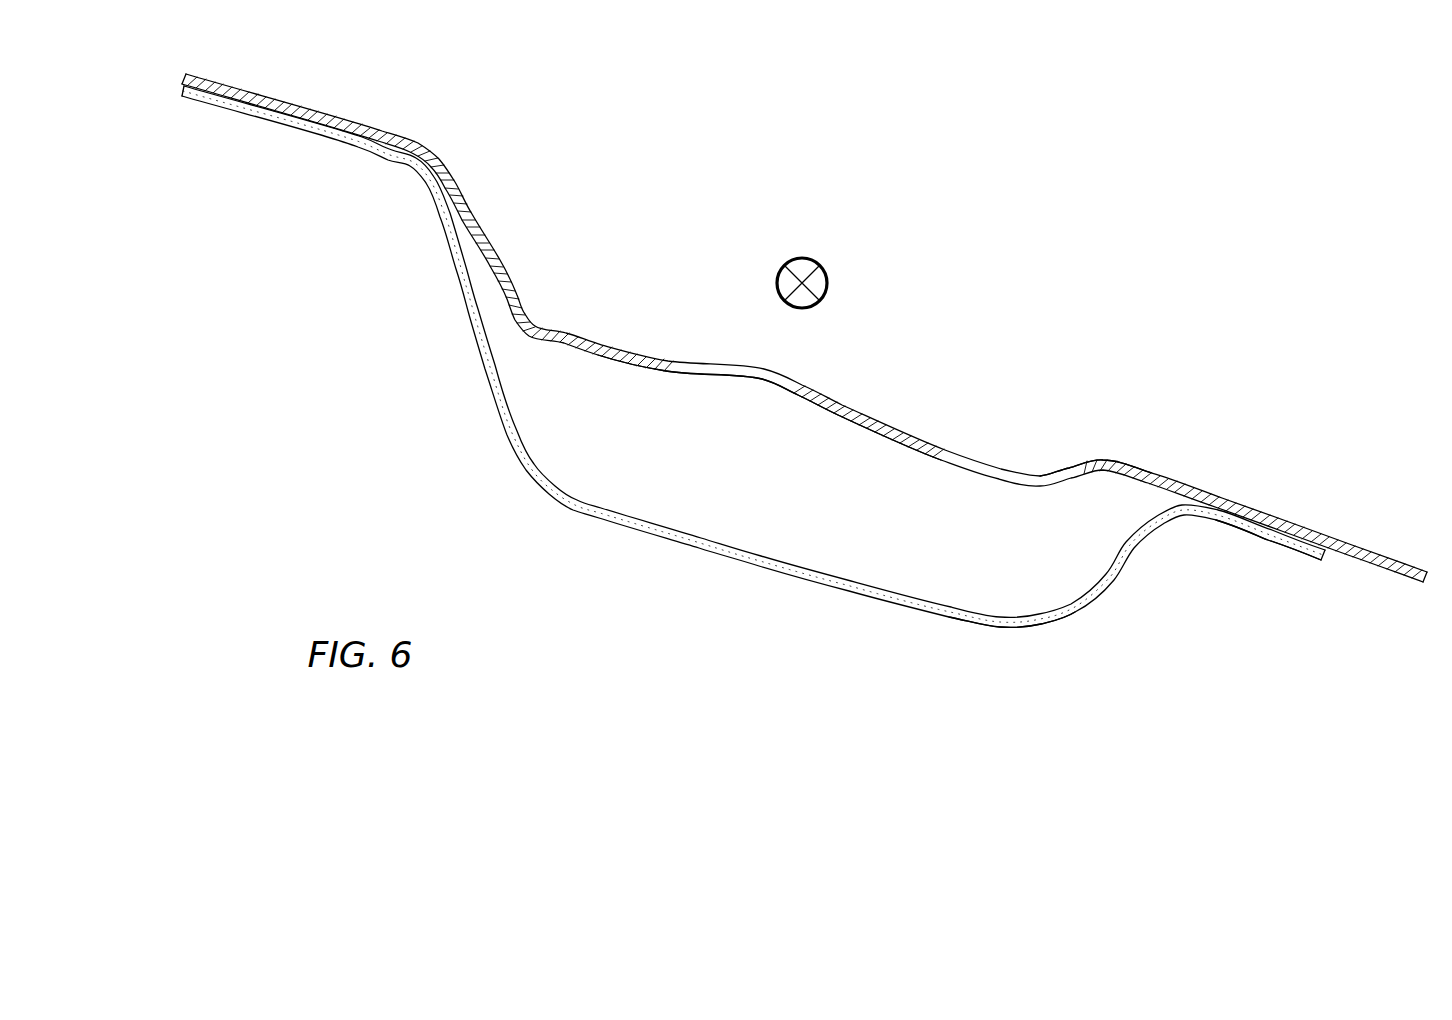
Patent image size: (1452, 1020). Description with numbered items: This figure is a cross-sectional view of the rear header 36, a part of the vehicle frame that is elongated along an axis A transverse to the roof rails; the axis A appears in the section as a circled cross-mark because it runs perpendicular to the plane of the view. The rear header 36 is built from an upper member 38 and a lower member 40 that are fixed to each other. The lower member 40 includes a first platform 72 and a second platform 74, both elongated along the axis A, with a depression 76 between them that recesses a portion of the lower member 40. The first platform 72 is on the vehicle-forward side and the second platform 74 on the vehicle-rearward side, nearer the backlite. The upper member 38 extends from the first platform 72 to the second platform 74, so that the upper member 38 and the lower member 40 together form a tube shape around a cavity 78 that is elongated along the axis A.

The rear header 36 is at (1007, 253).
The first platform 72 is at (297, 127).
The upper member 38 is at (1100, 460).
The depression 76 is at (789, 563).
The second platform 74 is at (1252, 528).
The lower member 40 is at (1054, 630).
The cavity 78 is at (771, 472).
The axis A is at (805, 283).